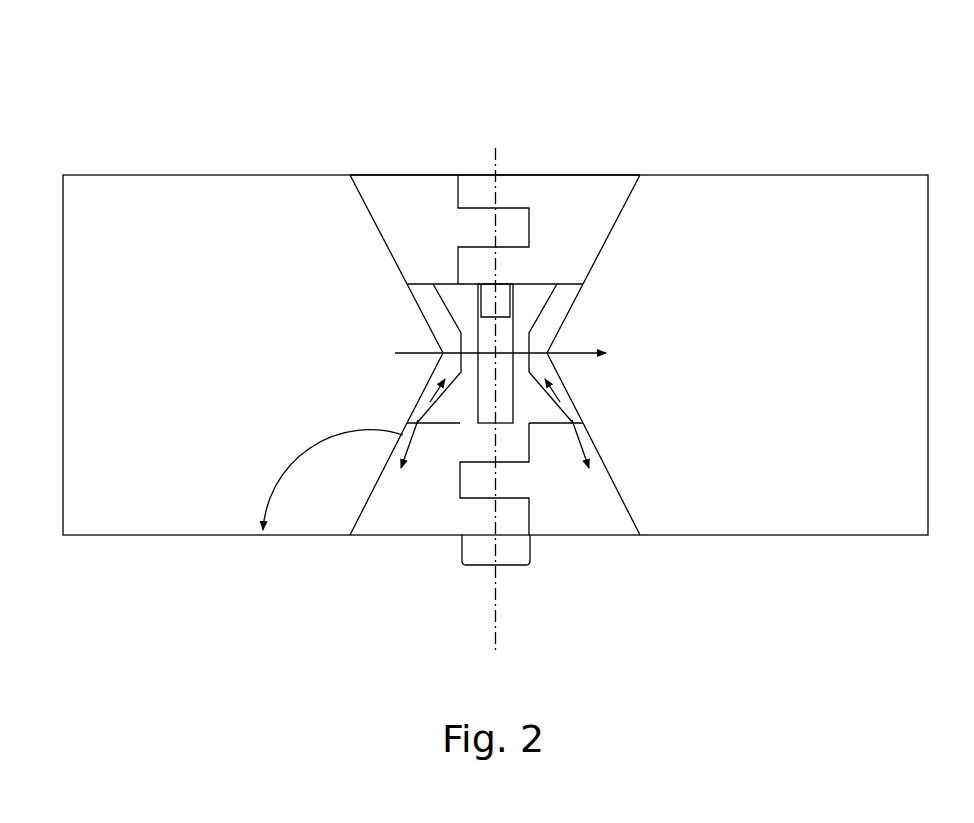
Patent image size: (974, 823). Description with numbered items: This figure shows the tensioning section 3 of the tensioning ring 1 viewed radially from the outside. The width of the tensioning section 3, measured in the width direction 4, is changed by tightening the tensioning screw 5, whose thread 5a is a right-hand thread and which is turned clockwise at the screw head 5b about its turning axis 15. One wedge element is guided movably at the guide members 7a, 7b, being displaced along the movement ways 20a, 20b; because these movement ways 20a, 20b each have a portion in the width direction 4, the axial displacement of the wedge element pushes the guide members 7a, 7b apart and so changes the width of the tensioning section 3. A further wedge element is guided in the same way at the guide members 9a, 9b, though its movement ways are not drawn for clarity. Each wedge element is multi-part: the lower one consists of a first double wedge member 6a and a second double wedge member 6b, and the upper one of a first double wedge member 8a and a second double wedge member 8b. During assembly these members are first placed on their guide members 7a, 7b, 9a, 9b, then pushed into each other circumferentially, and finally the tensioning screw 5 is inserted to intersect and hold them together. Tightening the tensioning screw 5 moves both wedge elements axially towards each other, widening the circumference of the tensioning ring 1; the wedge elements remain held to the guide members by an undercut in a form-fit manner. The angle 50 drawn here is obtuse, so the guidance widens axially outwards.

The tensioning ring 1 is at (137, 108).
The tensioning section 3 is at (350, 164).
The width direction 4 is at (423, 352).
The tensioning screw 5 is at (507, 338).
The thread 5a is at (507, 307).
The screw head 5b is at (480, 550).
The first double wedge member 6a is at (422, 507).
The second double wedge member 6b is at (565, 497).
The guide member 7a is at (447, 367).
The guide member 7b is at (568, 410).
The first double wedge member 8a is at (573, 227).
The second double wedge member 8b is at (408, 218).
The guide member 9a is at (563, 292).
The guide member 9b is at (438, 313).
The turning axis 15 is at (498, 602).
The movement way 20a is at (403, 436).
The movement way 20b is at (582, 437).
The angle 50 is at (292, 457).